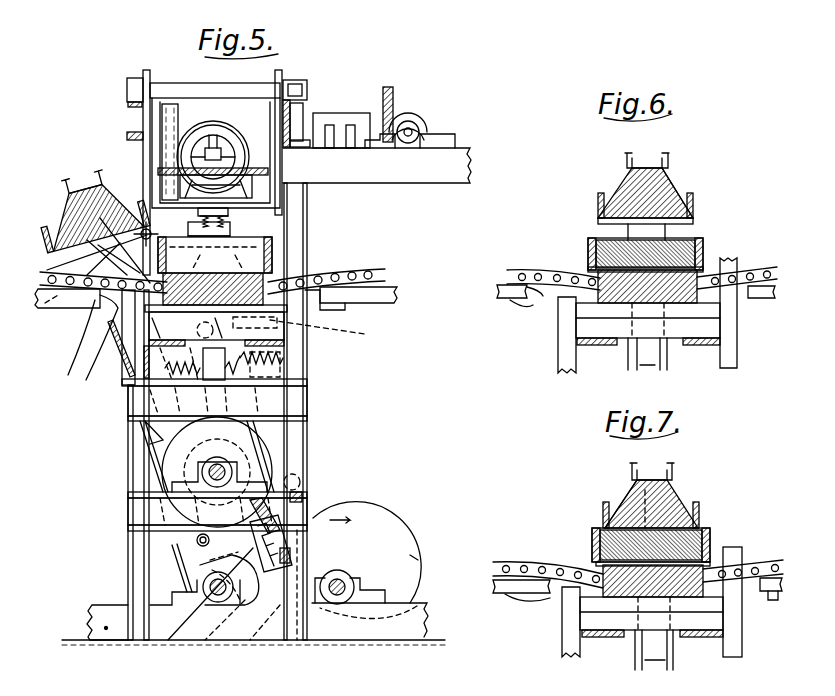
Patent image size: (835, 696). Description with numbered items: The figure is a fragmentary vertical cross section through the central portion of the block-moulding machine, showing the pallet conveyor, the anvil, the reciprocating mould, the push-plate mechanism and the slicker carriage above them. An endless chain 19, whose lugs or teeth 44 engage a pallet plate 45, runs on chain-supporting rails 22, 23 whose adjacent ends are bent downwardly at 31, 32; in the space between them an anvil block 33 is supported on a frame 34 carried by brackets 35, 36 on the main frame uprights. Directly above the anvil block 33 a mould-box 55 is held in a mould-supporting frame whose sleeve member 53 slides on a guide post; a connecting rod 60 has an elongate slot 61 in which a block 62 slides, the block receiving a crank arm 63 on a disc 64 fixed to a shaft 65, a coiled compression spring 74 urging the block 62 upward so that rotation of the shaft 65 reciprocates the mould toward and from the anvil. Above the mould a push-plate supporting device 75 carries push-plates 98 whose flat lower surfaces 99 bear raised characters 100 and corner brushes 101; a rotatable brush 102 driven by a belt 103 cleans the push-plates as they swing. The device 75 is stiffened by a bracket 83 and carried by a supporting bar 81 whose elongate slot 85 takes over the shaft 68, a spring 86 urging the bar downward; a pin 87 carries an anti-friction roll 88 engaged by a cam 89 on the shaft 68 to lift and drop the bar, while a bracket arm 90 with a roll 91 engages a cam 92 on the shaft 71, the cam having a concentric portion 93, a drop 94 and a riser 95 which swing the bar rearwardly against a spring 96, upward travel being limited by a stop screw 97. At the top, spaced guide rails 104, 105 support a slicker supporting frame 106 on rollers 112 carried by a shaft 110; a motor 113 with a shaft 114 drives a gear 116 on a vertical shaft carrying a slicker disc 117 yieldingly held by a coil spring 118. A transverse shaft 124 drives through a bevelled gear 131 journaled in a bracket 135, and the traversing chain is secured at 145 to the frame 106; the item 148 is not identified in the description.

In FIG. 5, the endless chain 19 is at (380, 270).
In FIG. 6, the endless chain 19 is at (514, 270).
In FIG. 7, the endless chain 19 is at (522, 562).
In FIG. 5, the chain-supporting rail 22 is at (78, 308).
In FIG. 6, the chain-supporting rail 22 is at (500, 286).
In FIG. 7, the chain-supporting rail 22 is at (512, 594).
In FIG. 5, the chain-supporting rail 23 is at (388, 290).
In FIG. 7, the chain-supporting rail 23 is at (774, 600).
In FIG. 5, the downwardly bent rail end 31 is at (69, 340).
In FIG. 6, the downwardly bent rail end 31 is at (540, 300).
In FIG. 7, the downwardly bent rail end 31 is at (546, 596).
In FIG. 5, the downwardly bent rail end 32 is at (326, 305).
In FIG. 6, the downwardly bent rail end 32 is at (737, 300).
In FIG. 7, the downwardly bent rail end 32 is at (742, 588).
In FIG. 5, the anvil block 33 is at (268, 302).
In FIG. 6, the anvil block 33 is at (600, 318).
In FIG. 7, the anvil block 33 is at (651, 611).
In FIG. 5, the frame 34 is at (216, 326).
In FIG. 6, the frame 34 is at (592, 330).
In FIG. 7, the frame 34 is at (592, 614).
In FIG. 5, the bracket 35 is at (122, 380).
In FIG. 6, the bracket 35 is at (570, 374).
In FIG. 7, the bracket 35 is at (580, 646).
In FIG. 5, the bracket 36 is at (290, 354).
In FIG. 6, the bracket 36 is at (710, 345).
In FIG. 7, the bracket 36 is at (710, 637).
In FIG. 6, the lugs or teeth 44 is at (590, 270).
In FIG. 5, the pallet plate 45 is at (263, 282).
In FIG. 6, the pallet plate 45 is at (590, 256).
In FIG. 7, the pallet plate 45 is at (706, 560).
In FIG. 5, the sleeve member 53 is at (232, 374).
In FIG. 6, the sleeve member 53 is at (632, 370).
In FIG. 7, the sleeve member 53 is at (654, 633).
In FIG. 5, the mould-box 55 is at (272, 256).
In FIG. 6, the mould-box 55 is at (703, 250).
In FIG. 7, the mould-box 55 is at (710, 532).
In FIG. 5, the connecting rod 60 is at (300, 412).
In FIG. 5, the elongate slot 61 is at (290, 558).
In FIG. 5, the block 62 is at (286, 458).
In FIG. 5, the crank arm 63 is at (300, 478).
In FIG. 5, the disc 64 is at (288, 430).
In FIG. 5, the shaft 65 is at (200, 470).
In FIG. 5, the shaft 68 is at (199, 607).
In FIG. 5, the shaft 71 is at (345, 580).
In FIG. 5, the coiled compression spring 74 is at (282, 546).
In FIG. 5, the push-plate supporting device 75 is at (85, 188).
In FIG. 6, the push-plate supporting device 75 is at (652, 160).
In FIG. 7, the push-plate supporting device 75 is at (660, 472).
In FIG. 5, the supporting bar 81 is at (122, 358).
In FIG. 6, the supporting bar 81 is at (664, 372).
In FIG. 7, the supporting bar 81 is at (648, 664).
In FIG. 5, the bracket 83 is at (110, 328).
In FIG. 5, the elongate slot 85 is at (262, 636).
In FIG. 5, the spring 86 is at (220, 633).
In FIG. 5, the pin 87 is at (200, 582).
In FIG. 5, the anti-friction roll 88 is at (196, 540).
In FIG. 5, the cam 89 is at (196, 570).
In FIG. 5, the bracket arm 90 is at (292, 470).
In FIG. 5, the anti-friction roll 91 is at (312, 500).
In FIG. 5, the cam 92 is at (386, 526).
In FIG. 5, the concentric portion 93 is at (410, 547).
In FIG. 5, the drop 94 is at (398, 612).
In FIG. 5, the riser 95 is at (297, 642).
In FIG. 5, the spring 96 is at (290, 366).
In FIG. 5, the stop screw 97 is at (327, 331).
In FIG. 5, the push-plate 98 is at (58, 250).
In FIG. 6, the push-plate 98 is at (672, 196).
In FIG. 7, the push-plate 98 is at (628, 510).
In FIG. 5, the flat lower surface 99 is at (56, 268).
In FIG. 6, the flat lower surface 99 is at (693, 226).
In FIG. 6, the raised characters 100 is at (598, 224).
In FIG. 5, the brush 101 is at (78, 182).
In FIG. 6, the brush 101 is at (598, 196).
In FIG. 7, the brush 101 is at (603, 508).
In FIG. 5, the rotatable brush 102 is at (157, 225).
In FIG. 5, the belt 103 is at (40, 308).
In FIG. 5, the guide rail 104 is at (128, 134).
In FIG. 5, the guide rail 105 is at (303, 112).
In FIG. 5, the slicker supporting frame 106 is at (162, 140).
In FIG. 5, the shaft 110 is at (192, 84).
In FIG. 5, the roller 112 is at (292, 80).
In FIG. 5, the motor 113 is at (212, 124).
In FIG. 5, the motor shaft 114 is at (130, 80).
In FIG. 5, the gear 116 is at (256, 166).
In FIG. 5, the slicker disc 117 is at (232, 236).
In FIG. 5, the coil spring 118 is at (228, 218).
In FIG. 5, the shaft 124 is at (418, 128).
In FIG. 5, the bevelled gear 131 is at (390, 87).
In FIG. 5, the bracket 135 is at (340, 113).
In FIG. 5, the chain securing point 145 is at (303, 92).
In FIG. 5, the guard 148 is at (410, 114).